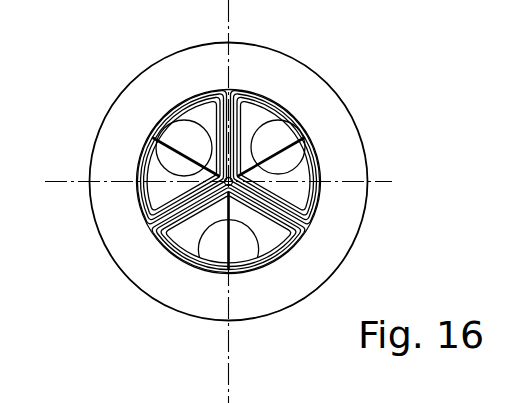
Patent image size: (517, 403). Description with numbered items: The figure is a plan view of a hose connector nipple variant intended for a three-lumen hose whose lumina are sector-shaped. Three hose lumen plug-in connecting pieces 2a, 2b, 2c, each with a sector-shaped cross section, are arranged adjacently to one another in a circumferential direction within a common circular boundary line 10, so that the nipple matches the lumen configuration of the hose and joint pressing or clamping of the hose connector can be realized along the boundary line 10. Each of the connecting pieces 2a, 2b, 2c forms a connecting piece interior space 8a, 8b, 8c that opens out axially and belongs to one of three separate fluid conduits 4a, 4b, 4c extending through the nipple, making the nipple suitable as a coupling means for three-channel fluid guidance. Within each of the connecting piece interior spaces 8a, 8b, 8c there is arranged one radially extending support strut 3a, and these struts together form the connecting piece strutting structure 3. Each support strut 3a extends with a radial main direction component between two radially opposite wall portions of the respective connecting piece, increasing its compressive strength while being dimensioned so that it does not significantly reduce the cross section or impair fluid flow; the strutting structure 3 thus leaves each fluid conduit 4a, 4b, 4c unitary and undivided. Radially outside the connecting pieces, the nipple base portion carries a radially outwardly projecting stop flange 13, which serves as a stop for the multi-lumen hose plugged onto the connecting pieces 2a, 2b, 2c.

The hose lumen plug-in connecting piece 2a is at (310, 163).
The hose lumen plug-in connecting piece 2b is at (264, 255).
The hose lumen plug-in connecting piece 2c is at (186, 145).
The connecting piece strutting structure 3 is at (276, 154).
The support strut 3a is at (192, 238).
The fluid conduit 4a is at (273, 137).
The fluid conduit 4b is at (245, 247).
The fluid conduit 4c is at (183, 135).
The connecting piece interior space 8a is at (287, 188).
The connecting piece interior space 8b is at (190, 240).
The connecting piece interior space 8c is at (203, 133).
The circular boundary line 10 is at (297, 215).
The stop flange 13 is at (183, 297).